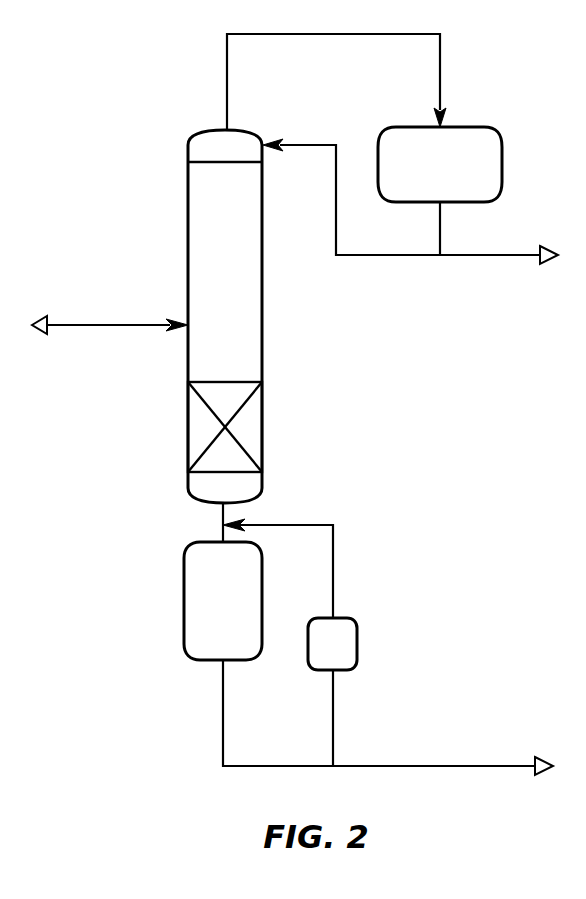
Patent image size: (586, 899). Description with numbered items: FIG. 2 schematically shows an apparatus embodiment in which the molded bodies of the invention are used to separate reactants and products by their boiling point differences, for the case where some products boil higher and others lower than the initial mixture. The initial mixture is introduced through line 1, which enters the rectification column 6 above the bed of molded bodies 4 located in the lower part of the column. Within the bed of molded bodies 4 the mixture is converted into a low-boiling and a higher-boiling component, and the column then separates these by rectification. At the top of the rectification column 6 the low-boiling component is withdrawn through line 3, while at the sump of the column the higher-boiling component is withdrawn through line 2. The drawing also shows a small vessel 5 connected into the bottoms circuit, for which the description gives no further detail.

The line 1 is at (117, 325).
The line 2 is at (472, 768).
The line 3 is at (497, 257).
The bed of molded bodies 4 is at (250, 428).
The small vessel (pump/heater) 5 is at (350, 662).
The rectification column 6 is at (317, 268).